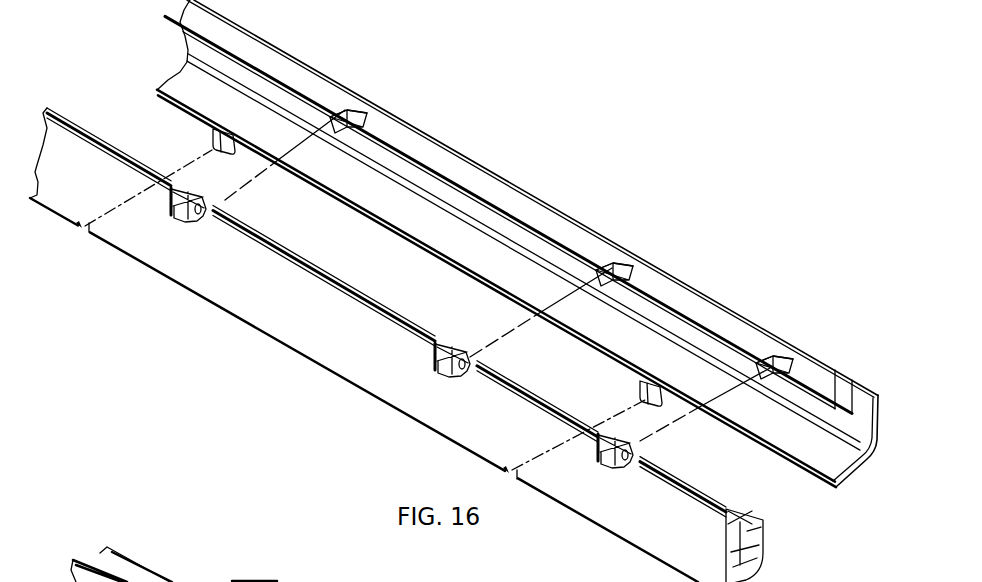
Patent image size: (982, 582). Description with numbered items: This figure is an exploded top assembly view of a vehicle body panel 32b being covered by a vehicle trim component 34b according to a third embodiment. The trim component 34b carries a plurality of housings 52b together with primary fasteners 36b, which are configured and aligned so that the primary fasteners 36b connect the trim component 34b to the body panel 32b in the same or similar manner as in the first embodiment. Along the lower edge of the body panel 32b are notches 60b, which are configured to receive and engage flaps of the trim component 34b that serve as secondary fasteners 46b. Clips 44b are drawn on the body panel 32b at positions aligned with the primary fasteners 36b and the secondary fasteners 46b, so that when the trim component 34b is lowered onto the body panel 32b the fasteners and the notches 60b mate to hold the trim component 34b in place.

The body panel 32b is at (266, 331).
The vehicle trim component 34b is at (720, 305).
The primary fasteners 36b is at (334, 128).
The clip 44b is at (193, 215).
The secondary fasteners 46b is at (212, 146).
The housings 52b is at (353, 110).
The notches 60b is at (84, 228).